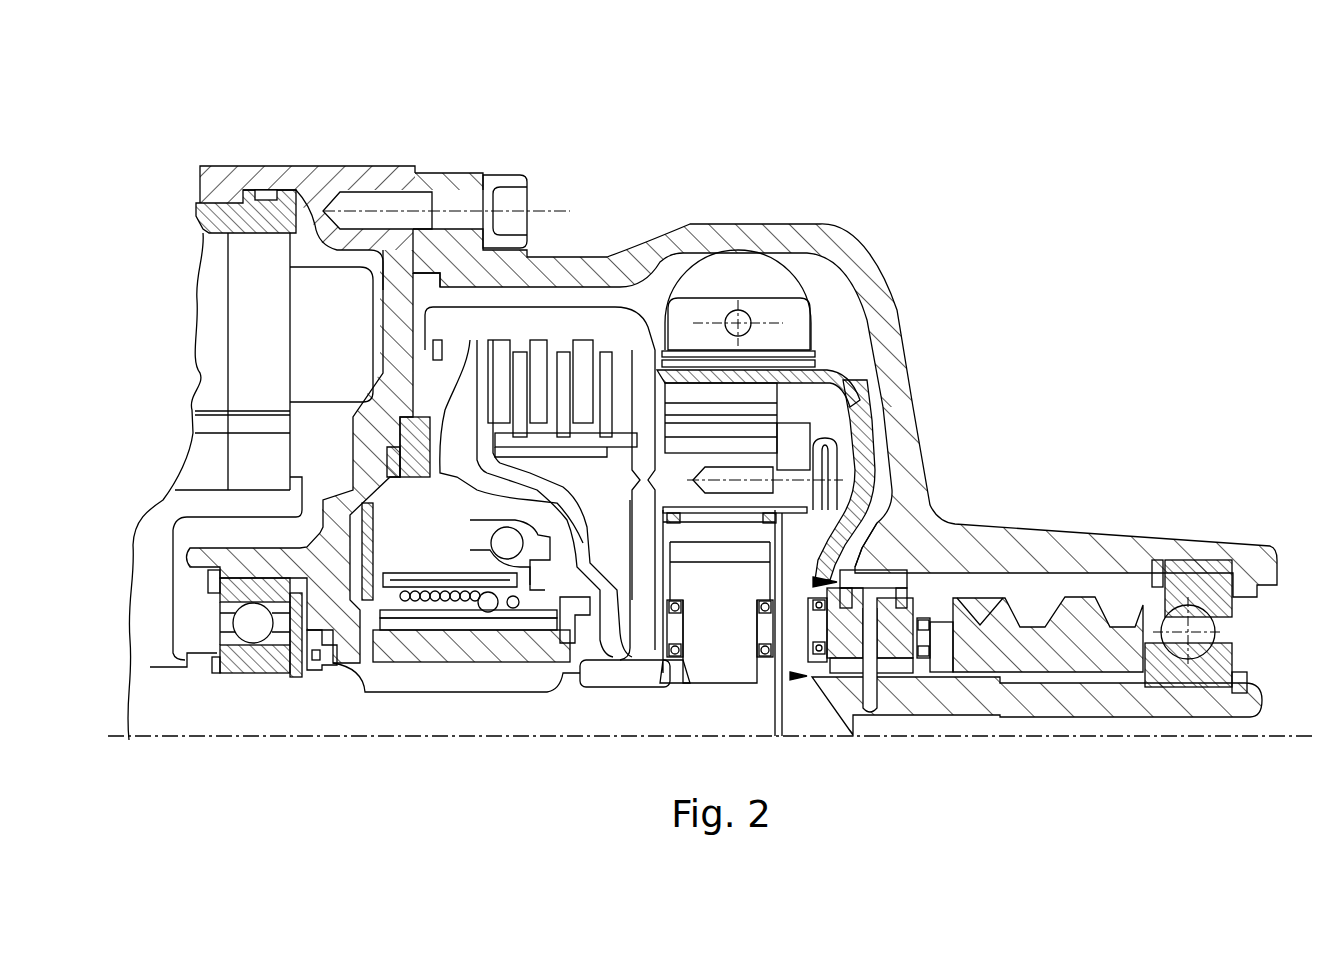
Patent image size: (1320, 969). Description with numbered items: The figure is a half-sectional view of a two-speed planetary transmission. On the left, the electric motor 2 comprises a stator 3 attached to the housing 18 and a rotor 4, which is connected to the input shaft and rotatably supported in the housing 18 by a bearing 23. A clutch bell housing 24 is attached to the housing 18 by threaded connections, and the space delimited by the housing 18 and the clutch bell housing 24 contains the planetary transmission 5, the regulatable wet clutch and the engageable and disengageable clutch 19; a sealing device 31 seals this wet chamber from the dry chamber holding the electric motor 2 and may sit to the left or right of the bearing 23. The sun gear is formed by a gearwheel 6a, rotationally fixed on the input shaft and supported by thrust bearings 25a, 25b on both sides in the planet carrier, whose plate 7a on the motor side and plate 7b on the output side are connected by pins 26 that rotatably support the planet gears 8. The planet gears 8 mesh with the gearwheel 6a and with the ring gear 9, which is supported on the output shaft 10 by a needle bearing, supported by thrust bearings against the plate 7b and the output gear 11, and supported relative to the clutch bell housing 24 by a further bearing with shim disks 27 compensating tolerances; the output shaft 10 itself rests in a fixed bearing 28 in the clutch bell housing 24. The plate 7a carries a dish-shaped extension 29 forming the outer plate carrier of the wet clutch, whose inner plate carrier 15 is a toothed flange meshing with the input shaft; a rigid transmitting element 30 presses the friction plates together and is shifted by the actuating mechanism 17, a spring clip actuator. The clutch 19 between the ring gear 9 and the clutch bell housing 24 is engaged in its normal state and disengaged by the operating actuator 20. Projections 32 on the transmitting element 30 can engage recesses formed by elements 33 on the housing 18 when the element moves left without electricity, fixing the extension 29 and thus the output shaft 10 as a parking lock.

The electric motor 2 is at (185, 146).
The stator 3 is at (198, 212).
The rotor 4 is at (193, 527).
The planetary transmission 5 is at (757, 197).
The gearwheel 6a is at (737, 640).
The plate on the motor side 7a is at (672, 635).
The plate on the output side 7b is at (828, 700).
The planet gears 8 is at (885, 513).
The ring gear 9 is at (860, 467).
The output shaft 10 is at (1187, 704).
The output gear 11 is at (1112, 623).
The inner plate carrier 15 is at (607, 620).
The actuating mechanism 17 is at (480, 650).
The housing 18 is at (300, 182).
The engageable and disengageable clutch 19 is at (785, 315).
The operating actuator 20 is at (728, 285).
The bearing 23 is at (233, 662).
The clutch bell housing 24 is at (868, 277).
The thrust bearing 25a is at (670, 640).
The thrust bearing 25b is at (785, 640).
The pins 26 is at (895, 412).
The shim disks 27 is at (943, 630).
The fixed bearing 28 is at (1207, 668).
The dish-shaped extension 29 is at (585, 310).
The transmitting element 30 is at (477, 348).
The sealing device 31 is at (314, 668).
The projections 32 is at (447, 478).
The elements 33 is at (375, 458).